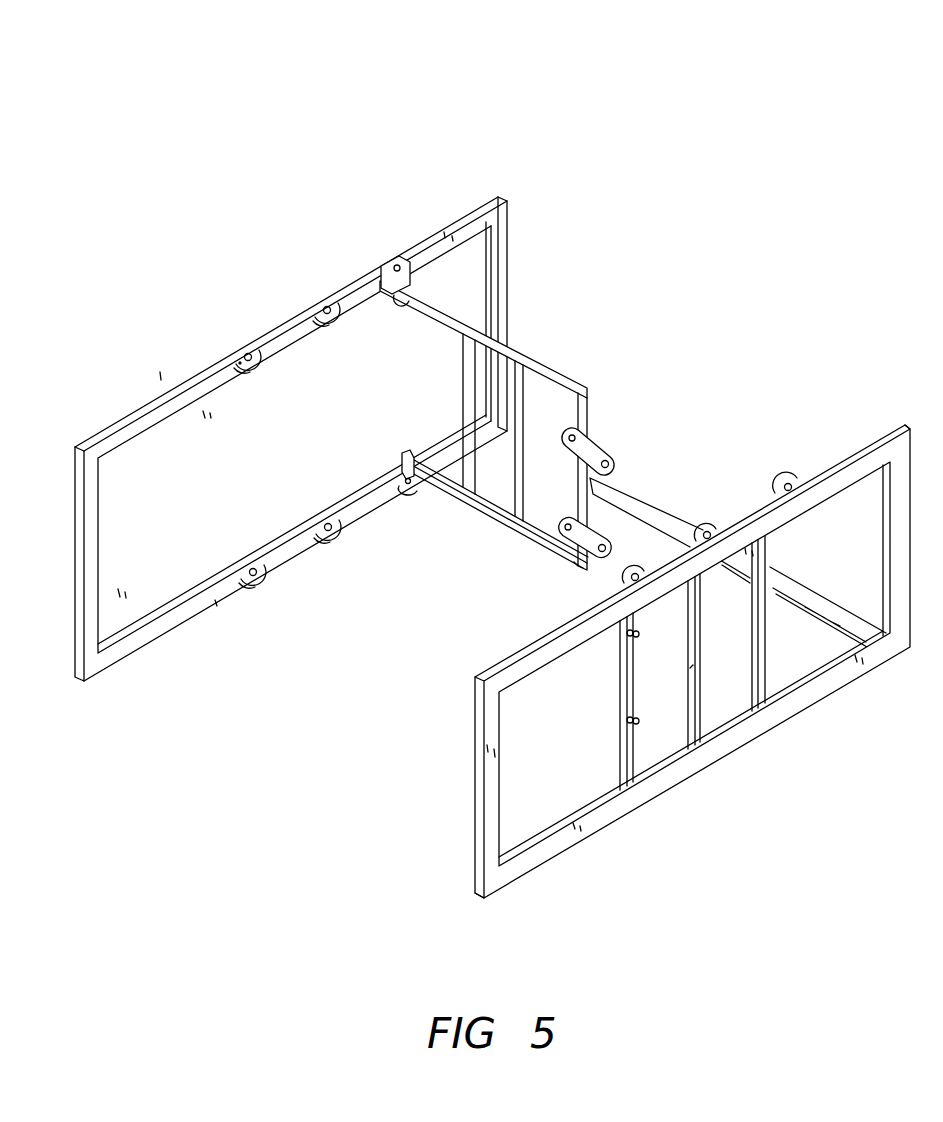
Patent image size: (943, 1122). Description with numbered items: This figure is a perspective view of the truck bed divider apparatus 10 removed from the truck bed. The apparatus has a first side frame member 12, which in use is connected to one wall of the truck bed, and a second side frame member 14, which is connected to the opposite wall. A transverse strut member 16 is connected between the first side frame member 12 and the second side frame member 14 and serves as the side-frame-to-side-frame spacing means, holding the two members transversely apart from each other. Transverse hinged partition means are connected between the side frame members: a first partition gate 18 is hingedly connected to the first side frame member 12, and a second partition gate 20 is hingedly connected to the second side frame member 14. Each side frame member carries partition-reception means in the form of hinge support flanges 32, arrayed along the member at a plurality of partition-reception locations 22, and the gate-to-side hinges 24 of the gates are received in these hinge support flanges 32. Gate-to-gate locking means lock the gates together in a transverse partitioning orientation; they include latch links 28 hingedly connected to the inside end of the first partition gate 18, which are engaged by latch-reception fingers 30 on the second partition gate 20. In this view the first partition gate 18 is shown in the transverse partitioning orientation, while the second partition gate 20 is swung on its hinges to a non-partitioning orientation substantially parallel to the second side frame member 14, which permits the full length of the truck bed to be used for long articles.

The truck bed divider apparatus 10 is at (489, 455).
The first side frame member 12 is at (157, 401).
The second side frame member 14 is at (512, 662).
The transverse strut member 16 is at (647, 507).
The first partition gate 18 is at (527, 347).
The second partition gate 20 is at (693, 665).
The partition-reception locations 22 is at (314, 302).
The gate-to-side hinges 24 is at (397, 262).
The latch links 28 is at (592, 441).
The latch-reception fingers 30 is at (628, 637).
The hinge support flanges 32 is at (232, 367).